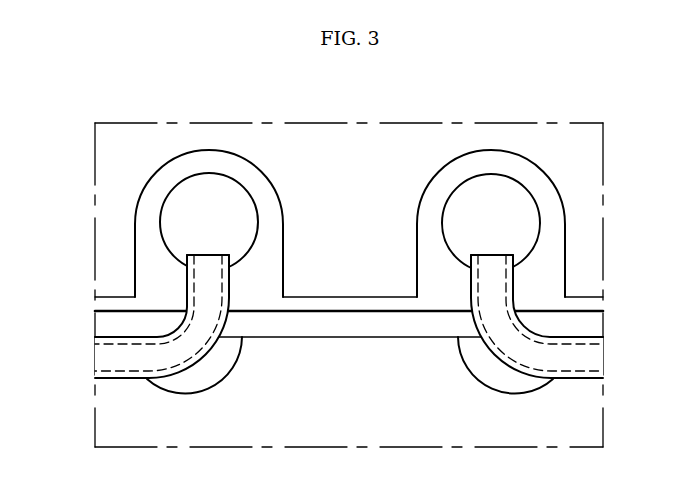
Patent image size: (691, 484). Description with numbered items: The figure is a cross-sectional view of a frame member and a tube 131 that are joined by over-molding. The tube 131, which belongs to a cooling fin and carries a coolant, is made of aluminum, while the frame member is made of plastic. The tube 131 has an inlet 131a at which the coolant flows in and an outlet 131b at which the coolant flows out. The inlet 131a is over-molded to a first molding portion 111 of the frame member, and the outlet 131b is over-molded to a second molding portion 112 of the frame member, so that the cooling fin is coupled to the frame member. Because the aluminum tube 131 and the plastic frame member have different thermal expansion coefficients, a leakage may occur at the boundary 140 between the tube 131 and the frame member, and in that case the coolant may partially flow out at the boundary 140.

The first molding portion 111 is at (243, 150).
The second molding portion 112 is at (522, 150).
The tube 131 is at (108, 358).
The inlet 131a is at (206, 254).
The outlet 131b is at (489, 254).
The boundary 140 is at (180, 273).